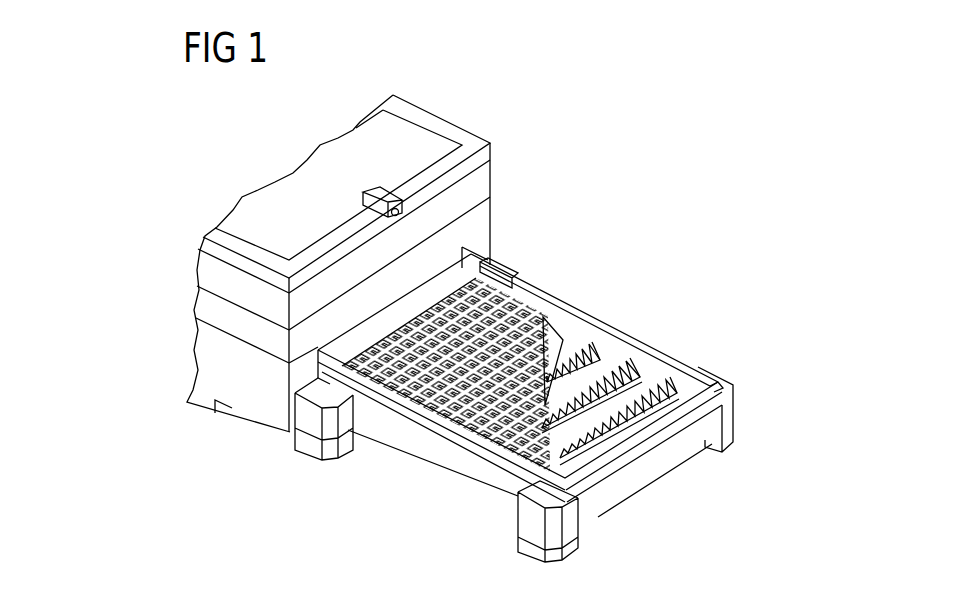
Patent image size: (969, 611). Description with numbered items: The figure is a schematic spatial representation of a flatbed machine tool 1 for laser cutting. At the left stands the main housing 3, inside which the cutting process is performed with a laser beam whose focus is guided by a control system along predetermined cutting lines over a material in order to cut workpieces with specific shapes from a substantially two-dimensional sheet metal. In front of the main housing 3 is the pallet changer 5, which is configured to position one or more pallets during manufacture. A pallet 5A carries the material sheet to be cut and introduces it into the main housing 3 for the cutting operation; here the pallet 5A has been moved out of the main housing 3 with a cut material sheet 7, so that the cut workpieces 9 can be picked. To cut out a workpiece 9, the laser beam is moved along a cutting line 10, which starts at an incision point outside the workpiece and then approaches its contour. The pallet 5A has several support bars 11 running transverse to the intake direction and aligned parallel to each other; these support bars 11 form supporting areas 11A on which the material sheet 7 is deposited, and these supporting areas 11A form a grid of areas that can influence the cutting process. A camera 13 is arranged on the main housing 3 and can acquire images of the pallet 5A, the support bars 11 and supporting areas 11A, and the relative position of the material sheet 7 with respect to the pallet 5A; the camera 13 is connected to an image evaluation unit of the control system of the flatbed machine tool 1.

The flatbed machine tool 1 is at (674, 140).
The main housing 3 is at (279, 201).
The pallet changer 5 is at (487, 485).
The pallet 5A is at (450, 428).
The cut material sheet 7 is at (508, 278).
The cut workpieces 9 is at (524, 289).
The cutting line 10 is at (548, 296).
The support bars 11 is at (630, 315).
The supporting areas 11A is at (664, 372).
The camera 13 is at (383, 190).